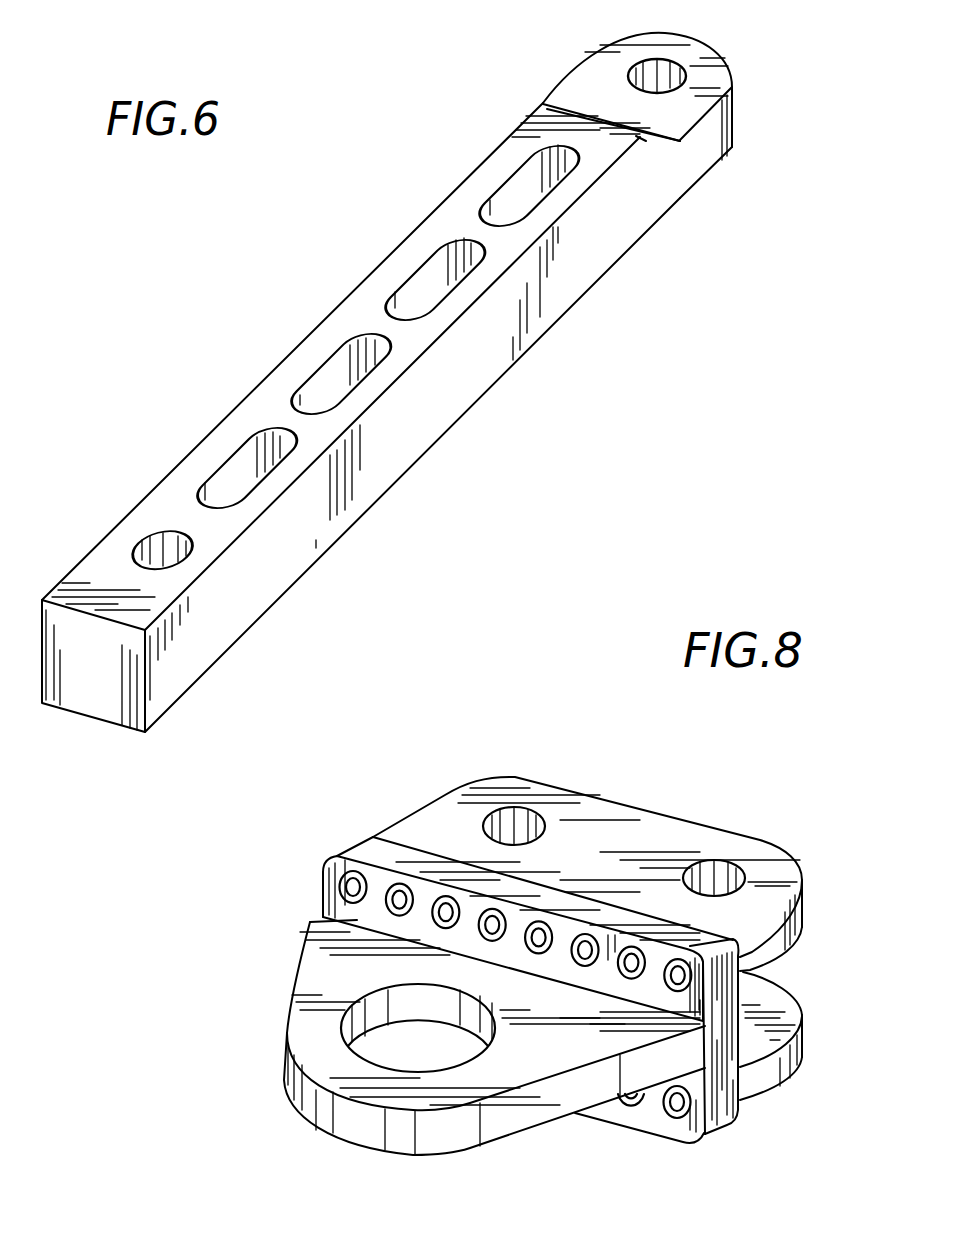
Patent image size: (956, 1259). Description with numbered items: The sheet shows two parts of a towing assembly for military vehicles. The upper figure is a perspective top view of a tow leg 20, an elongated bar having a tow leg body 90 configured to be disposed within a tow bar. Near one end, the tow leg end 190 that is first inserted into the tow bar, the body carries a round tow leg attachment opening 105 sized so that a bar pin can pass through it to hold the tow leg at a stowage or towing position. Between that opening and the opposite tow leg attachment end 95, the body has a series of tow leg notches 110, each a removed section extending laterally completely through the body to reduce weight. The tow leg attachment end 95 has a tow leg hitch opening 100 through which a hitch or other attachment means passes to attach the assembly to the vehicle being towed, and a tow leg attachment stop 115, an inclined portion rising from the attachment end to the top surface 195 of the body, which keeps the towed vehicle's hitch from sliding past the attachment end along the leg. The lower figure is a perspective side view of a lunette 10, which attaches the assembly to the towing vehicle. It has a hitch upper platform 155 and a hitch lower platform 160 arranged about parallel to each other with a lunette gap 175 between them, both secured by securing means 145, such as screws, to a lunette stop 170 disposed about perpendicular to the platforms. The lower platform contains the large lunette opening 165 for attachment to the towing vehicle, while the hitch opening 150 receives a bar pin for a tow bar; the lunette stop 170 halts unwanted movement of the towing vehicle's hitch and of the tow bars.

In FIG. 6, the tow leg 20 is at (430, 407).
In FIG. 6, the tow leg body 90 is at (500, 175).
In FIG. 6, the tow leg attachment end 95 is at (723, 130).
In FIG. 6, the tow leg hitch opening 100 is at (673, 76).
In FIG. 6, the tow leg attachment opening 105 is at (158, 533).
In FIG. 6, the tow leg notch 110 is at (332, 380).
In FIG. 6, the tow leg attachment stop 115 is at (645, 138).
In FIG. 6, the tow leg end 190 is at (92, 693).
In FIG. 6, the top surface 195 is at (190, 478).
In FIG. 8, the lunette 10 is at (529, 962).
In FIG. 8, the securing means 145 is at (682, 1107).
In FIG. 8, the hitch opening 150 is at (723, 877).
In FIG. 8, the hitch upper platform 155 is at (447, 803).
In FIG. 8, the hitch lower platform 160 is at (773, 1067).
In FIG. 8, the lunette opening 165 is at (437, 1043).
In FIG. 8, the lunette stop 170 is at (326, 873).
In FIG. 8, the lunette gap 175 is at (788, 969).